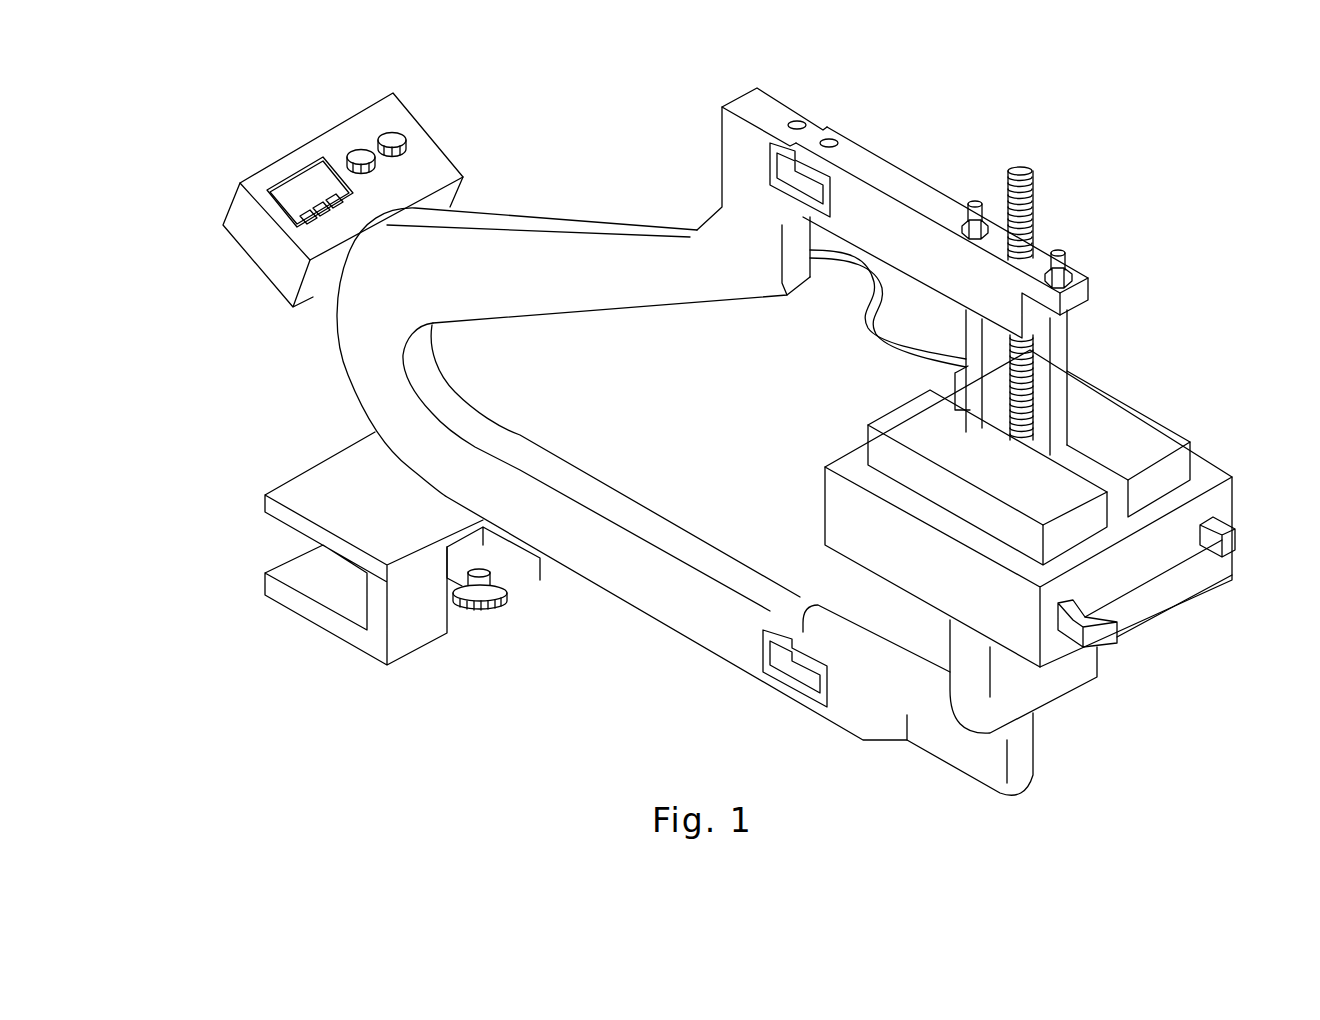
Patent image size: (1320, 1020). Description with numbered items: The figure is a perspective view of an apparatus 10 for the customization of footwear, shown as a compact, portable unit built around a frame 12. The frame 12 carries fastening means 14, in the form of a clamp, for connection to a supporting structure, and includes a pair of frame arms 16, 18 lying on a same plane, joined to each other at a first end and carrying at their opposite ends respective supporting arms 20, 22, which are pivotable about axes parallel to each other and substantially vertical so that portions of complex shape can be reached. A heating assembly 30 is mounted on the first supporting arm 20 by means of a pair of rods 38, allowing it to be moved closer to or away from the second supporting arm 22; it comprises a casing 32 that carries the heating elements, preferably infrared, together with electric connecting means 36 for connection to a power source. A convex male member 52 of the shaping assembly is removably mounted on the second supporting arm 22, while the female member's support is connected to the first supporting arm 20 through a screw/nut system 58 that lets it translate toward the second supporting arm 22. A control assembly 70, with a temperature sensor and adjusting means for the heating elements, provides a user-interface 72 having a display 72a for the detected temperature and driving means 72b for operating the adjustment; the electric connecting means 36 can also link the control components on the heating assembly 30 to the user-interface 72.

The apparatus 10 is at (1210, 253).
The frame 12 is at (718, 84).
The fastening means 14 is at (507, 597).
The frame arm 16 is at (583, 250).
The frame arm 18 is at (610, 573).
The first supporting arm 20 is at (917, 195).
The second supporting arm 22 is at (883, 712).
The heating assembly 30 is at (1203, 620).
The casing 32 is at (917, 440).
The electric connecting means 36 is at (855, 312).
The rods 38 is at (1032, 388).
The male member 52 is at (1027, 688).
The screw/nut system 58 is at (1032, 207).
The control assembly 70 is at (243, 292).
The user-interface 72 is at (250, 240).
The display 72a is at (313, 177).
The driving means 72b is at (397, 140).